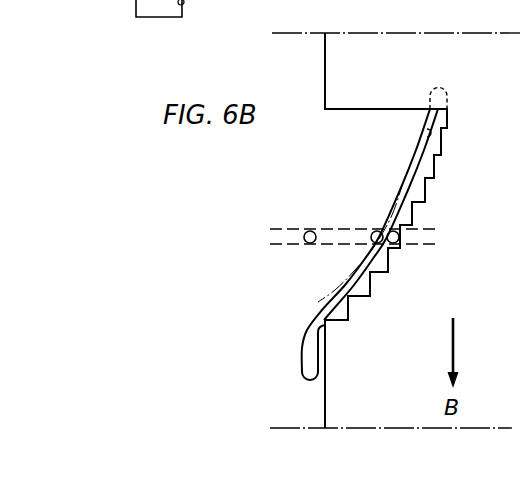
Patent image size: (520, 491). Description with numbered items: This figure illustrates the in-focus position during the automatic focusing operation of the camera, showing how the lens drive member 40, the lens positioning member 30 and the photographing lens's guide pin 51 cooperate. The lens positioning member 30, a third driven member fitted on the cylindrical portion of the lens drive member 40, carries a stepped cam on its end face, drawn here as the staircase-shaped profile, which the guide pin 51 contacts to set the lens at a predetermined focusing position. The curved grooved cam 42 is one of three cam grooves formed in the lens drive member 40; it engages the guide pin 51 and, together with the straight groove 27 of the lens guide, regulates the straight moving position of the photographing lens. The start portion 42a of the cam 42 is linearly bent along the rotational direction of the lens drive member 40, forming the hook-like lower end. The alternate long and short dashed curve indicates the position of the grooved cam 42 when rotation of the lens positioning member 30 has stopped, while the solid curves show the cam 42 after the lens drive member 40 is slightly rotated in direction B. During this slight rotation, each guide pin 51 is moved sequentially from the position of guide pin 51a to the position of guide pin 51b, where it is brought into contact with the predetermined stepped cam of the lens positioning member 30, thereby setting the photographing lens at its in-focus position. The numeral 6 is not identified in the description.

The sheet-forming apparatus (partial) 6 is at (181, 8).
The lens positioning member 30 is at (355, 41).
The lens drive member 40 is at (306, 42).
The cam groove 42 is at (427, 133).
The start portion 42a is at (302, 367).
The straight groove 27 is at (289, 246).
The guide pin 51 is at (310, 231).
The guide pin position 51a is at (374, 231).
The guide pin position 51b is at (400, 237).